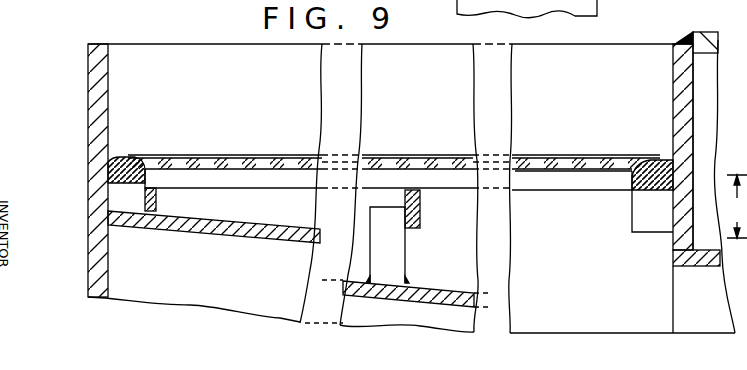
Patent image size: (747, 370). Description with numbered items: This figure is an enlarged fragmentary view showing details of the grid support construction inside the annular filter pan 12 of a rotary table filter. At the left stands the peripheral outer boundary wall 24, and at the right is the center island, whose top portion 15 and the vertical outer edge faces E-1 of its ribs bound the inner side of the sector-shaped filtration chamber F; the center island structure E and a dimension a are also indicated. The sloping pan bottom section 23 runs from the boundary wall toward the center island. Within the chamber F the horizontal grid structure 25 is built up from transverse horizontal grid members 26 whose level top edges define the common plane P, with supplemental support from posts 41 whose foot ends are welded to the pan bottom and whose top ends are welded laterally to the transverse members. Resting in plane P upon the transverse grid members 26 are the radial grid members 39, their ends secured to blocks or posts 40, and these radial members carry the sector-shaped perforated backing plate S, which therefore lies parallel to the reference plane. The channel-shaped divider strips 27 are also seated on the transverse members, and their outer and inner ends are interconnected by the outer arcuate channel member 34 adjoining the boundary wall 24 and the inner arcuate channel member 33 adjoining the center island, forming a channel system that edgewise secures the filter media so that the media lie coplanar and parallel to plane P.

The annular filter pan 12 is at (215, 47).
The peripheral outer boundary wall 24 is at (90, 88).
The top portion 15 is at (674, 83).
The outer arcuate channel member 34 is at (112, 158).
The inner arcuate channel member 33 is at (669, 167).
The radial grid members 39 is at (566, 184).
The divider strips 27 is at (657, 187).
The blocks or posts 40 is at (151, 200).
The pan bottom sections 23 is at (200, 230).
The posts 41 is at (396, 242).
The transverse horizontal grid members 26 is at (420, 228).
The horizontal grid structure 25 is at (428, 194).
The common plane P is at (188, 188).
The perforated backing plate S is at (228, 169).
The filtration chambers F is at (548, 273).
The vertical outer edge faces E-1 is at (672, 298).
The edge member E is at (724, 312).
The dimension a is at (737, 206).